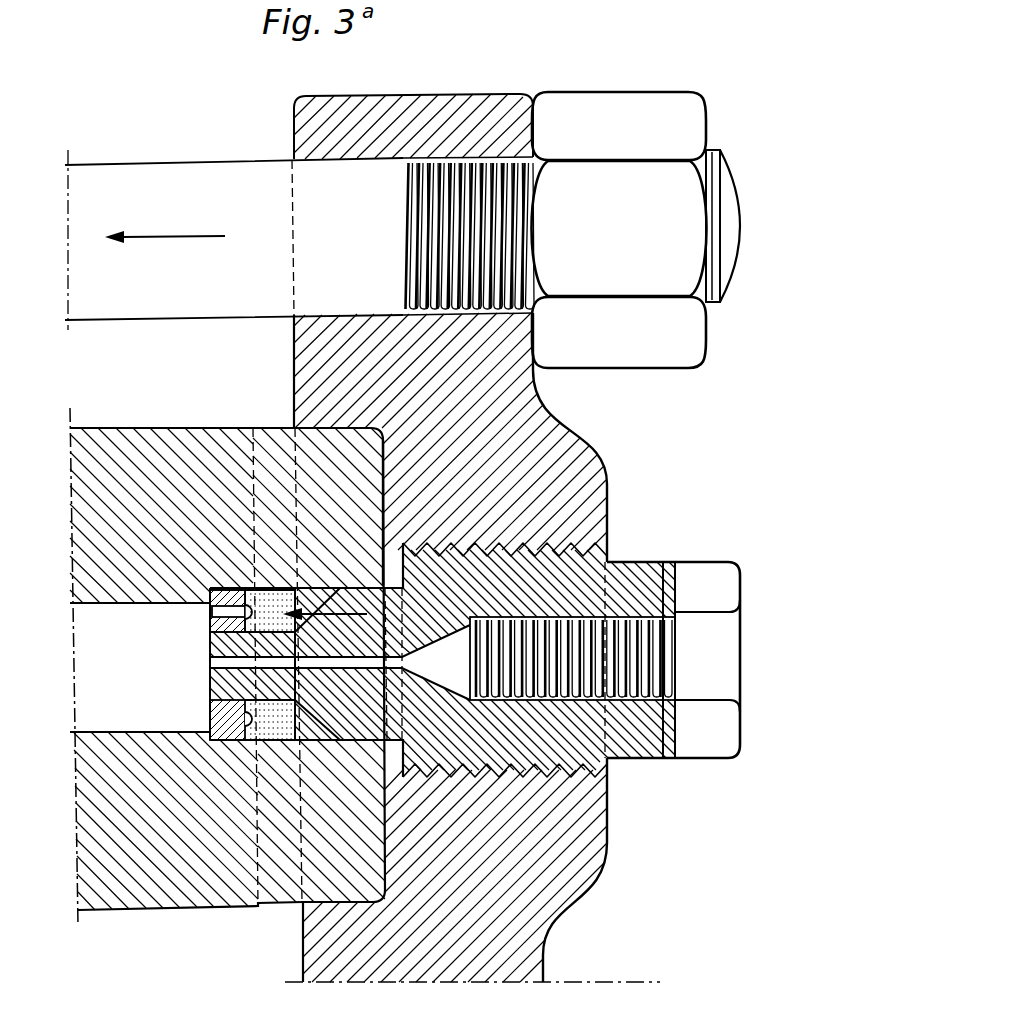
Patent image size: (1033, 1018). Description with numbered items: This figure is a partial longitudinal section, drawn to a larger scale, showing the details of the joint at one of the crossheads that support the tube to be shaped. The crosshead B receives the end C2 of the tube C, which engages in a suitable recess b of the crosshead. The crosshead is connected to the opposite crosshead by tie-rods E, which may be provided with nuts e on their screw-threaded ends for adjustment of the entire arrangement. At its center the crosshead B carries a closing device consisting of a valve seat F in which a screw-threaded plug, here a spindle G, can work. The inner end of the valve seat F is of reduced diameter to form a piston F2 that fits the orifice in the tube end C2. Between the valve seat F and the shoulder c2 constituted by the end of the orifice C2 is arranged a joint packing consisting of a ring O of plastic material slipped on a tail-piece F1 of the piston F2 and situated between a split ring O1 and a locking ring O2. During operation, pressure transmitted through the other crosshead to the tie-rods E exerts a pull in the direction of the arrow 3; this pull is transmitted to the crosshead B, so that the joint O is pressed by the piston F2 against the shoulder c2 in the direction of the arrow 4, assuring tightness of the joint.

The crosshead B is at (381, 120).
The recess b is at (384, 500).
The tie-rods E is at (257, 170).
The arrow 3 is at (182, 240).
The nuts e is at (618, 105).
The tube C is at (70, 465).
The end of the tube C2 is at (280, 455).
The tail-piece F1 is at (228, 686).
The piston F2 is at (210, 664).
The shoulder c2 is at (207, 733).
The ring of plastic material O is at (270, 598).
The locking ring O2 is at (228, 592).
The split ring O1 is at (311, 596).
The arrow 4 is at (292, 620).
The valve seat F is at (637, 735).
The spindle G is at (618, 628).